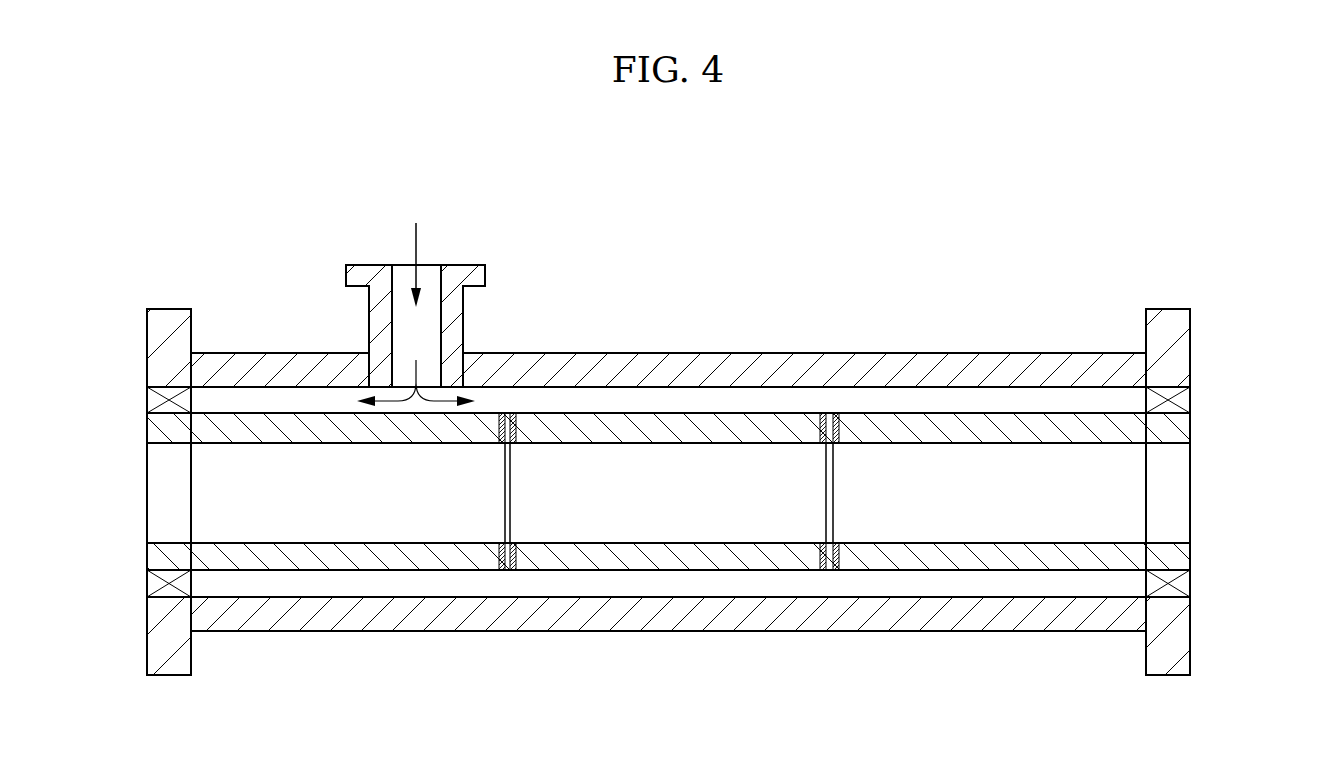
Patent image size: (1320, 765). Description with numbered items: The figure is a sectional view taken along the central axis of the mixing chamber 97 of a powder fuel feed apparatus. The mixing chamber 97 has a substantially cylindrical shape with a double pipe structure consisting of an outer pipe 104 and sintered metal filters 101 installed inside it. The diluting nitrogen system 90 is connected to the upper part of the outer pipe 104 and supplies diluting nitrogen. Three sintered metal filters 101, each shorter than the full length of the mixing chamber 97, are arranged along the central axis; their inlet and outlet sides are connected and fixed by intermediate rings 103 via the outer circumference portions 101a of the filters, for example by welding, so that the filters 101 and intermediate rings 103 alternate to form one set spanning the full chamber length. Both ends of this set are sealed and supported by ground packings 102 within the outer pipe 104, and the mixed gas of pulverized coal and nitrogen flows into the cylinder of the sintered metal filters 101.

The mixing chamber 97 is at (992, 264).
The outer pipe 104 is at (673, 352).
The sintered metal filter 101 is at (370, 571).
The outer circumference portion 101a is at (823, 413).
The ground packing 102 is at (147, 399).
The intermediate ring 103 is at (508, 571).
The diluting nitrogen system 90 is at (465, 318).